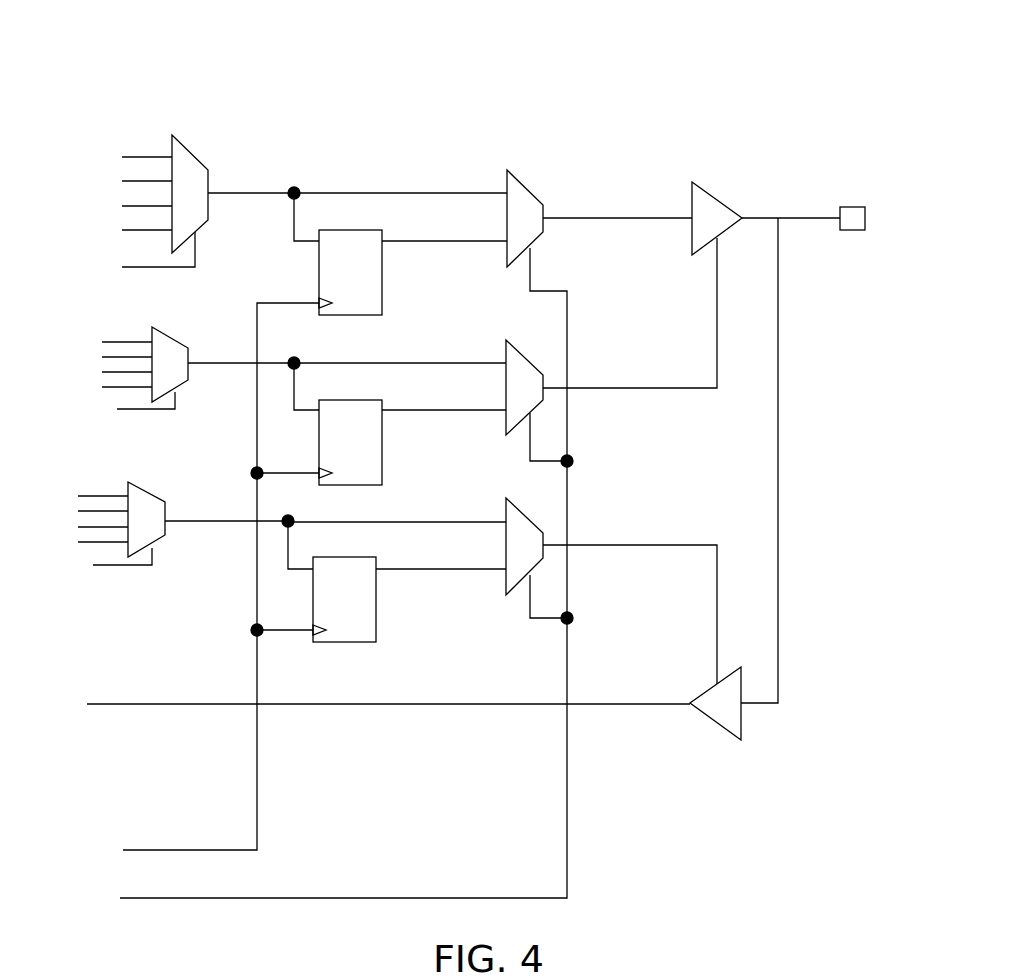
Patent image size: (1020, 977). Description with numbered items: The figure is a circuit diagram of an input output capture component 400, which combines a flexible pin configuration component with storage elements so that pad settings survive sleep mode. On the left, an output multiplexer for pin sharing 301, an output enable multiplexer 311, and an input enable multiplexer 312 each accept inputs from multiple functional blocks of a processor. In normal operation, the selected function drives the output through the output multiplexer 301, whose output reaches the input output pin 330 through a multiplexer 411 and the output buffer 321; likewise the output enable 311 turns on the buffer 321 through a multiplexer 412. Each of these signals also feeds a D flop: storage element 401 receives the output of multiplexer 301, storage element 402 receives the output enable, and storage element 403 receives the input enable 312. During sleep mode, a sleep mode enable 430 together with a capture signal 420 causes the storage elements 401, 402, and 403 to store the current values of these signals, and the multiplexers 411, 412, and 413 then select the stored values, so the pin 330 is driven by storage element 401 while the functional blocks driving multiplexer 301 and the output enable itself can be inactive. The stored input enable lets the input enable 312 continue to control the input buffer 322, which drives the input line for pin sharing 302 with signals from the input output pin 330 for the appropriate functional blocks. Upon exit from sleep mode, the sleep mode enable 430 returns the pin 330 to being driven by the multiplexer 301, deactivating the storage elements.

The input output capture component 400 is at (468, 24).
The output multiplexer for pin sharing 301 is at (83, 110).
The output enable multiplexer 311 is at (70, 308).
The input enable multiplexer 312 is at (70, 472).
The input signal line for pin sharing 302 is at (50, 668).
The storage element 401 is at (364, 281).
The storage element 402 is at (364, 451).
The storage element 403 is at (358, 608).
The multiplexer 411 is at (540, 187).
The multiplexer 412 is at (530, 352).
The multiplexer 413 is at (530, 517).
The output buffer 321 is at (722, 200).
The input buffer 322 is at (712, 722).
The input output pin 330 is at (877, 217).
The capture signal 420 is at (103, 831).
The sleep mode enable 430 is at (90, 879).